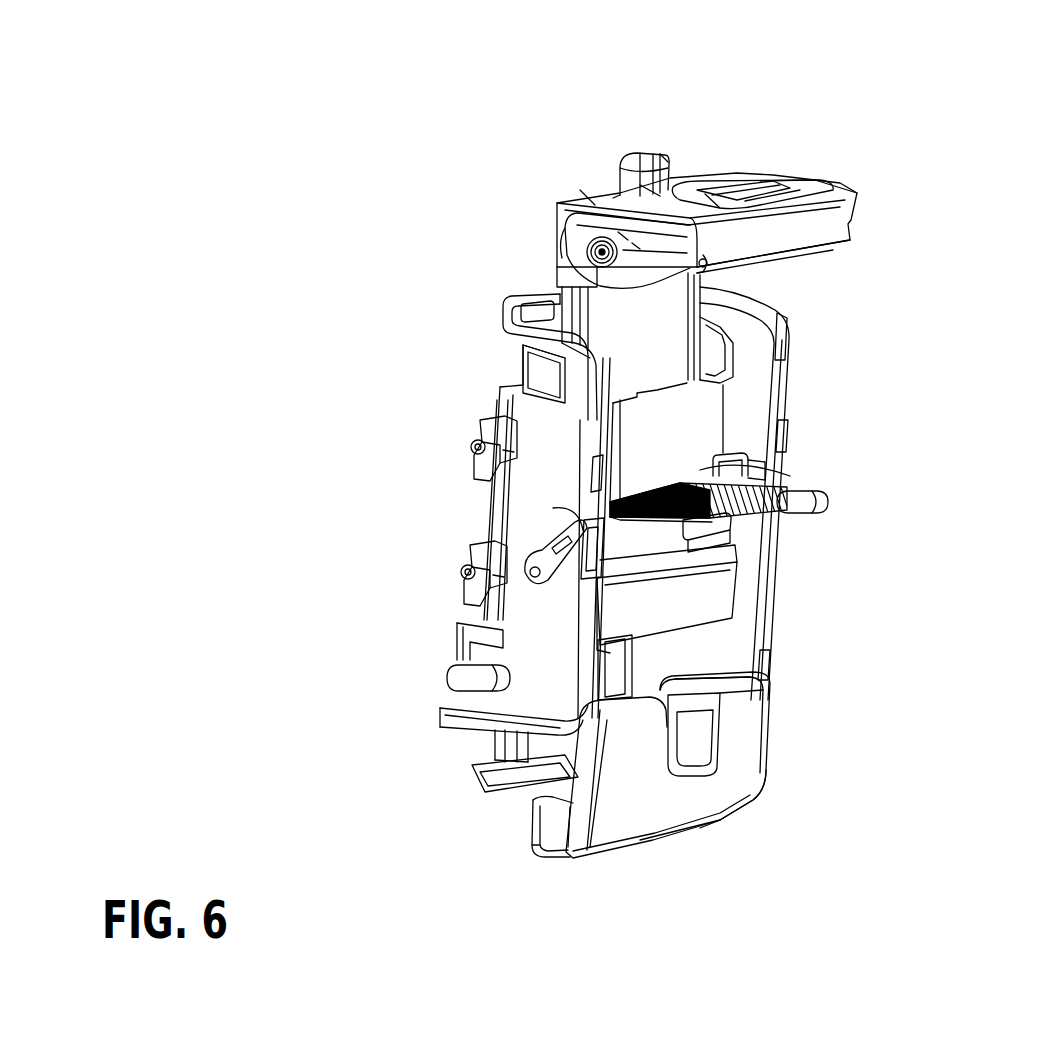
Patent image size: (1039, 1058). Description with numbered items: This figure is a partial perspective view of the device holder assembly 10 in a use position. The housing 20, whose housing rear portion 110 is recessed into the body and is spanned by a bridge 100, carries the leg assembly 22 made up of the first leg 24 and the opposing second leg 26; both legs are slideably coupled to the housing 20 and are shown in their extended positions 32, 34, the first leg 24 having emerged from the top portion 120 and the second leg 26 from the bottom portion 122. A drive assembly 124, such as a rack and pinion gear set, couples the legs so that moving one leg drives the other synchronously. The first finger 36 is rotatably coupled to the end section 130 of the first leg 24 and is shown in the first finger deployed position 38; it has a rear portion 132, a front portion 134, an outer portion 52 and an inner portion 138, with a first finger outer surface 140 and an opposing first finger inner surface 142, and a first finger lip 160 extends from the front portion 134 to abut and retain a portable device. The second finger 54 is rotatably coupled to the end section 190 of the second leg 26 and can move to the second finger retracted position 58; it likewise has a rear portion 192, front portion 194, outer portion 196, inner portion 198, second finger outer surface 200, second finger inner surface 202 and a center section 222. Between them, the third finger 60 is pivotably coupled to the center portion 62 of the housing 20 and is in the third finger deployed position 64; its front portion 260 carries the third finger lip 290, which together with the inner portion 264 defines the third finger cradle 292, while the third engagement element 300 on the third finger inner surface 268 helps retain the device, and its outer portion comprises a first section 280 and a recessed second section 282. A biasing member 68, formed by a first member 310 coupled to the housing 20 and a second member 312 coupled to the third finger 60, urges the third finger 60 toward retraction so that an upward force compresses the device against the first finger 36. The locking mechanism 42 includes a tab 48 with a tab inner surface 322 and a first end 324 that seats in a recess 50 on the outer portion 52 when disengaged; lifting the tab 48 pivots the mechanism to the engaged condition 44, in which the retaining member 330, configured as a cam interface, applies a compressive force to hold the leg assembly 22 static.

The device holder assembly 10 is at (487, 195).
The housing 20 is at (483, 700).
The leg assembly 22 is at (842, 448).
The first leg 24 is at (597, 320).
The second leg 26 is at (505, 735).
The extended position 32 is at (540, 310).
The extended position 34 is at (503, 752).
The first finger 36 is at (770, 173).
The first finger deployed position 38 is at (815, 172).
The locking mechanism 42 is at (650, 183).
The engaged condition 44 is at (620, 170).
The tab 48 is at (620, 198).
The recess 50 is at (773, 168).
The outer portion 52 is at (793, 180).
The second finger 54 is at (592, 847).
The second finger retracted position 58 is at (627, 843).
The third finger 60 is at (753, 538).
The center portion 62 is at (732, 440).
The third finger deployed position 64 is at (750, 527).
The biasing member 68 is at (530, 567).
The bridge 100 is at (740, 603).
The housing rear portion 110 is at (522, 492).
The top portion 120 is at (523, 343).
The bottom portion 122 is at (465, 730).
The drive assembly 124 is at (690, 430).
The end section 130 is at (553, 240).
The rear portion 132 is at (745, 177).
The front portion 134 is at (840, 228).
The inner portion 138 is at (598, 315).
The first finger outer surface 140 is at (845, 178).
The first finger inner surface 142 is at (573, 245).
The first finger lip 160 is at (820, 250).
The end section 190 is at (500, 787).
The rear portion 192 is at (545, 840).
The front portion 194 is at (733, 677).
The outer portion 196 is at (740, 730).
The inner portion 198 is at (700, 705).
The second finger outer surface 200 is at (717, 800).
The second finger inner surface 202 is at (767, 710).
The center section 222 is at (740, 775).
The front portion 260 is at (783, 487).
The inner portion 264 is at (790, 488).
The third finger inner surface 268 is at (720, 443).
The first section 280 is at (760, 537).
The second section 282 is at (763, 587).
The third finger lip 290 is at (803, 483).
The third finger cradle 292 is at (572, 478).
The third engagement element 300 is at (600, 455).
The first member 310 is at (543, 550).
The second member 312 is at (567, 517).
The tab inner surface 322 is at (718, 193).
The first end 324 is at (672, 153).
The retaining member 330 is at (587, 190).